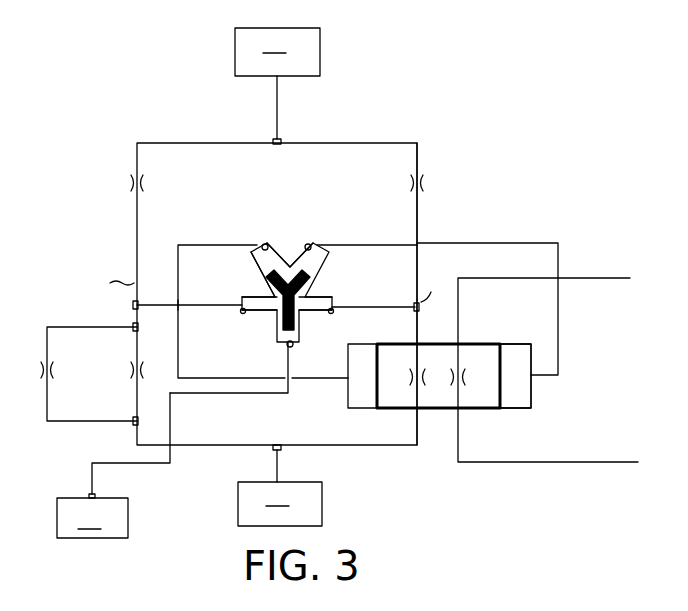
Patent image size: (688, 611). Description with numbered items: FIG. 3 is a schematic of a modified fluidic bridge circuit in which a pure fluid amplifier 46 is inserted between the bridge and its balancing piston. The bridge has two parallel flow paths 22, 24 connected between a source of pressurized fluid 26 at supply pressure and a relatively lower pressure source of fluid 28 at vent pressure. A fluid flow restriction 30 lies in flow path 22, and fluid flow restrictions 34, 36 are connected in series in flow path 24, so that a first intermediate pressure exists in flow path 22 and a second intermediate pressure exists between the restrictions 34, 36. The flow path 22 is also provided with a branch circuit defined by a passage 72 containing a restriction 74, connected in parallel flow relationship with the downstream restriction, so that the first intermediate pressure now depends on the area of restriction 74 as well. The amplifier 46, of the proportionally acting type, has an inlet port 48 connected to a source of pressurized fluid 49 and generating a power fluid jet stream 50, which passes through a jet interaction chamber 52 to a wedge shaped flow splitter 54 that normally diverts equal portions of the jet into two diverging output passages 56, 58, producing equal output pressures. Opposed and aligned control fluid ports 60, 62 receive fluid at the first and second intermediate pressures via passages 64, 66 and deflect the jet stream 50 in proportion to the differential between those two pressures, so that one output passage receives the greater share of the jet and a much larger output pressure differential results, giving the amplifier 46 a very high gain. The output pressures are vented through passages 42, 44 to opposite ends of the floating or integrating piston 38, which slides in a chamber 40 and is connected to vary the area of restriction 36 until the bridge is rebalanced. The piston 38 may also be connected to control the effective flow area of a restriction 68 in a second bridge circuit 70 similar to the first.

The flow path 22 is at (172, 143).
The flow path 24 is at (357, 143).
The source of pressurized fluid 26 is at (277, 86).
The lower pressure source of fluid 28 is at (280, 486).
The fluid flow restriction 30 is at (127, 183).
The fluid flow restriction 34 is at (427, 183).
The fluid flow restriction 36 is at (405, 382).
The piston 38 is at (478, 356).
The chamber 40 is at (520, 390).
The passage 42 is at (180, 245).
The passage 44 is at (510, 243).
The pure fluid amplifier 46 is at (325, 266).
The inlet port 48 is at (293, 346).
The source of pressurized fluid 49 is at (113, 465).
The power fluid jet stream 50 is at (300, 318).
The jet interaction chamber 52 is at (265, 289).
The wedge shaped flow splitter 54 is at (289, 265).
The output passage 56 is at (263, 245).
The output passage 58 is at (312, 246).
The control fluid port 60 is at (272, 306).
The control fluid port 62 is at (329, 296).
The passage 64 is at (198, 306).
The passage 66 is at (393, 307).
The restriction 68 is at (463, 388).
The second bridge circuit 70 is at (602, 276).
The passage 72 is at (58, 327).
The restriction 74 is at (47, 384).